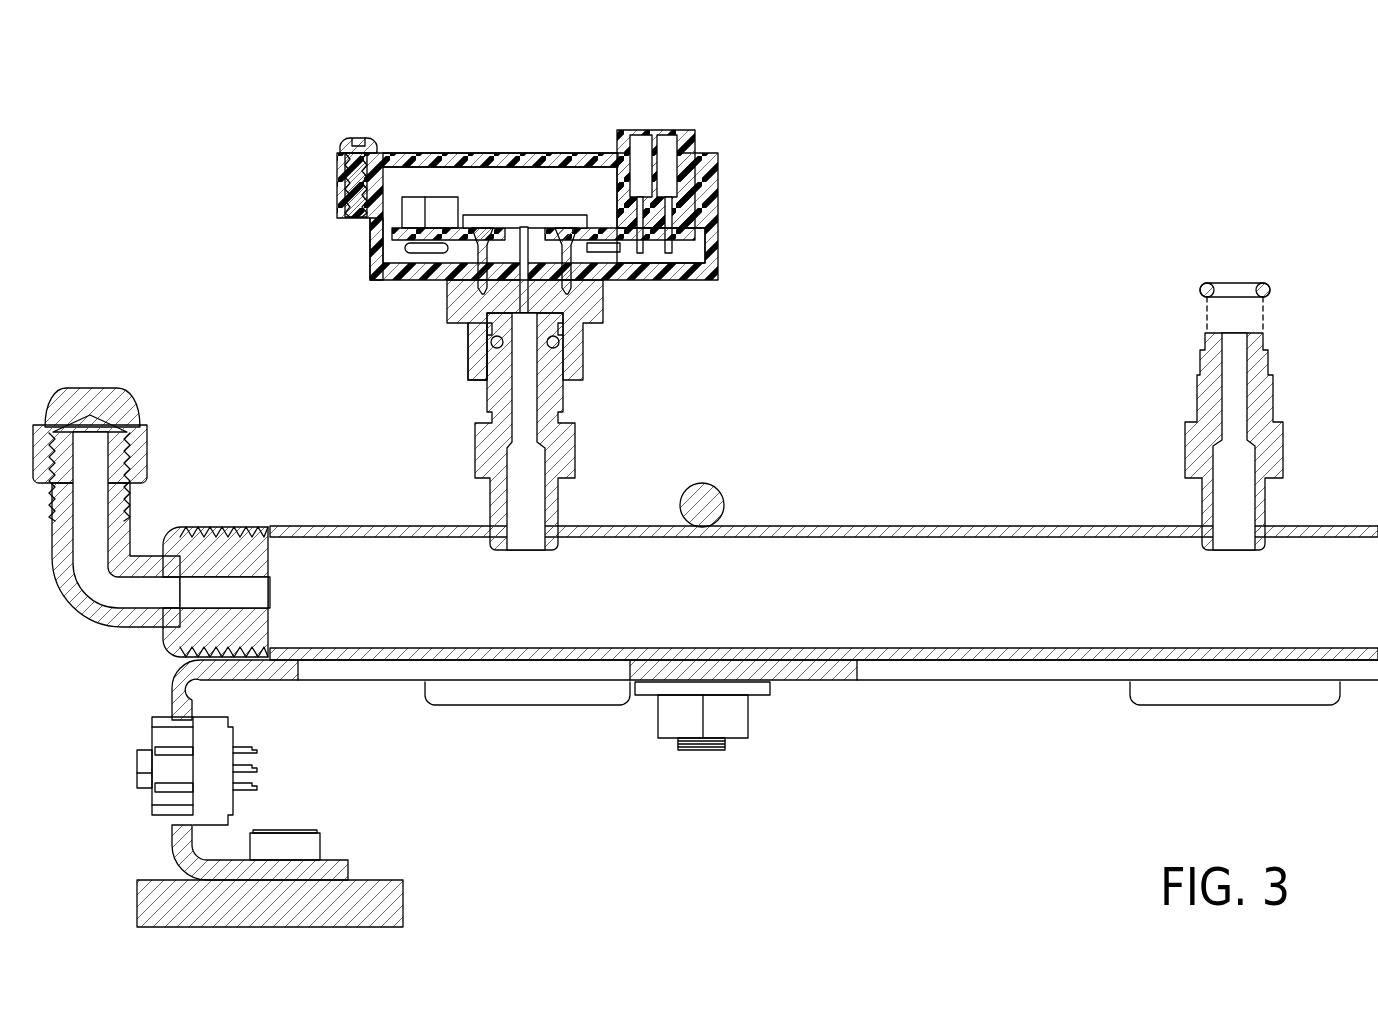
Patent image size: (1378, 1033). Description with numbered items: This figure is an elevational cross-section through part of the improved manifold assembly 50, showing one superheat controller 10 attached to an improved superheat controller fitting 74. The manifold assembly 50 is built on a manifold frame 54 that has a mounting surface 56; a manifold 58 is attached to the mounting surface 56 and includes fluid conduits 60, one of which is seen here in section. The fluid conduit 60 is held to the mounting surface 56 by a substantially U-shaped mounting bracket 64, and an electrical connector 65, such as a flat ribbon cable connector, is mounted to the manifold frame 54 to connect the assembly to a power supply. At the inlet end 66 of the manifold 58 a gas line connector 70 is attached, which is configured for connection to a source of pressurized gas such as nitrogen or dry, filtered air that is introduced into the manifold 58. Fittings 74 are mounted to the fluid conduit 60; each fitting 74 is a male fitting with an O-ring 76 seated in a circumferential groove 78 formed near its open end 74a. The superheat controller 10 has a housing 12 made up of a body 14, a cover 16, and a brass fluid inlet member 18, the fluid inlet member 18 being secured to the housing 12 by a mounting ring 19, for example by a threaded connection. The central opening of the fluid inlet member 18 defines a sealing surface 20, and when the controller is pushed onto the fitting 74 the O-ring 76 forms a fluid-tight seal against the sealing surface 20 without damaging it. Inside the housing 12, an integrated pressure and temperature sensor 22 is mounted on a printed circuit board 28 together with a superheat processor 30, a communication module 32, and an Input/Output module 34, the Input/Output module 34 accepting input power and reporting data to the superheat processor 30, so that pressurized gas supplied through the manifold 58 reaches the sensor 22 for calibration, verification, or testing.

The superheat controller 10 is at (342, 96).
The housing 12 is at (372, 263).
The body 14 is at (372, 235).
The cover 16 is at (400, 152).
The fluid inlet member 18 is at (458, 350).
The mounting ring 19 is at (450, 300).
The sealing surface 20 is at (512, 342).
The integrated pressure and temperature sensor 22 is at (522, 216).
The printed circuit board 28 is at (692, 236).
The superheat processor 30 is at (445, 197).
The communication module 32 is at (603, 255).
The Input/Output module 34 is at (692, 130).
The manifold assembly 50 is at (190, 324).
The manifold frame 54 is at (182, 702).
The mounting surface 56 is at (1015, 648).
The manifold 58 is at (907, 524).
The fluid conduit 60 is at (360, 524).
The mounting bracket 64 is at (705, 483).
The electrical connector 65 is at (152, 812).
The inlet end 66 is at (197, 526).
The gas line connector 70 is at (90, 388).
The SHC fitting 74 is at (575, 447).
The open end 74a is at (1203, 340).
The O-ring 76 is at (559, 343).
The circumferential groove 78 is at (1266, 345).